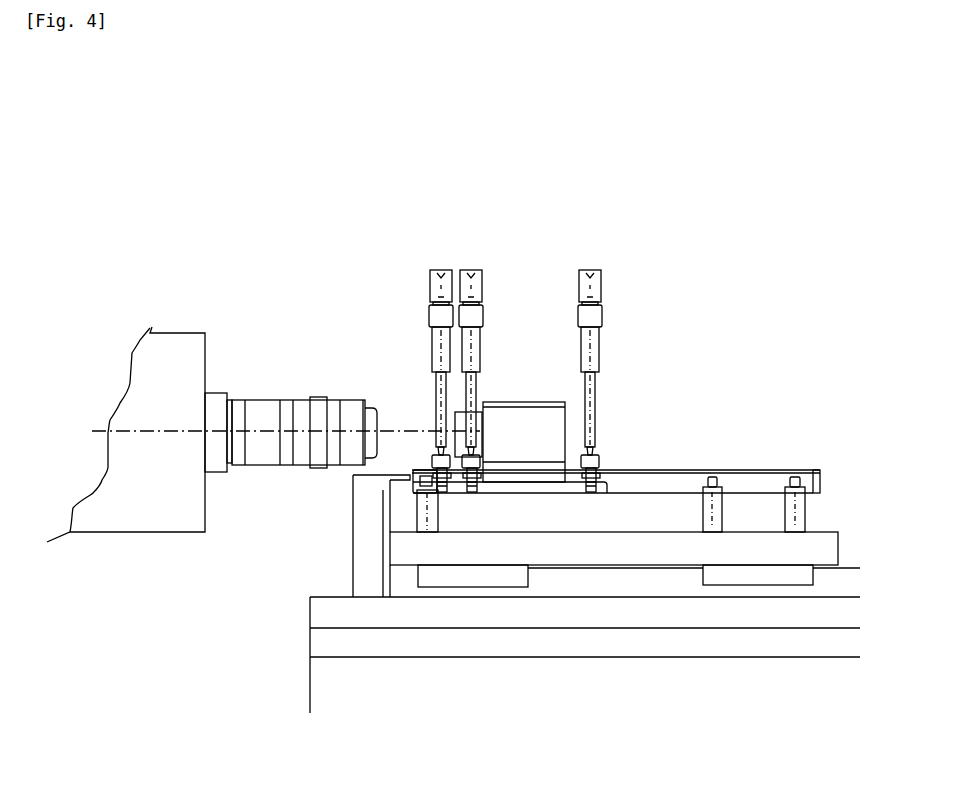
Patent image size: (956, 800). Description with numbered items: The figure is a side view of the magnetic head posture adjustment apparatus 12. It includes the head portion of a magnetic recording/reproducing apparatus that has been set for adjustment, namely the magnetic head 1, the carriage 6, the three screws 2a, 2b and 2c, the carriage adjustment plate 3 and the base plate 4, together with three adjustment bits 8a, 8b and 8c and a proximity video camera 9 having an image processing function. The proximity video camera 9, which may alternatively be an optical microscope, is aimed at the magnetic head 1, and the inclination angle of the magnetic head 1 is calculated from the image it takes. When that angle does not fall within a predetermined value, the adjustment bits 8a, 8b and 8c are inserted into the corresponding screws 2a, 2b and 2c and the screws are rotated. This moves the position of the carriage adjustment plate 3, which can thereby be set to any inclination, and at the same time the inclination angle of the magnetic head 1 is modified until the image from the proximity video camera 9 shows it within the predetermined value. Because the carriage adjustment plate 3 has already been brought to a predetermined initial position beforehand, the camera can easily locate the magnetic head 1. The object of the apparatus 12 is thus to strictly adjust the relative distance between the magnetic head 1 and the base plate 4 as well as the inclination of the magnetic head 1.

The magnetic head posture adjustment apparatus 12 is at (236, 226).
The proximity video camera 9 is at (355, 412).
The magnetic head 1 is at (457, 443).
The adjustment bit 8a is at (440, 433).
The adjustment bit 8b is at (476, 400).
The adjustment bit 8c is at (593, 397).
The carriage 6 is at (512, 423).
The screw 2a is at (438, 490).
The screw 2b is at (477, 490).
The screw 2c is at (594, 488).
The base plate 4 is at (765, 470).
The carriage adjustment plate 3 is at (603, 488).